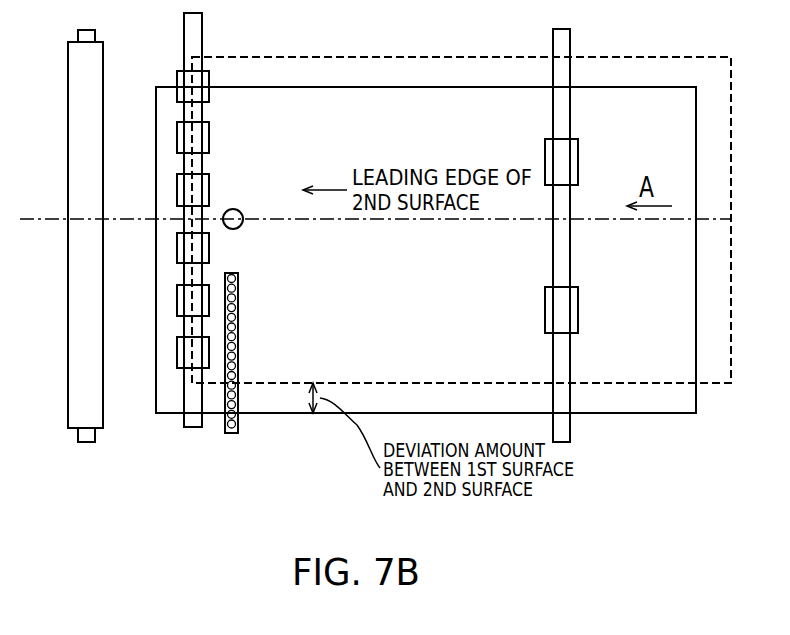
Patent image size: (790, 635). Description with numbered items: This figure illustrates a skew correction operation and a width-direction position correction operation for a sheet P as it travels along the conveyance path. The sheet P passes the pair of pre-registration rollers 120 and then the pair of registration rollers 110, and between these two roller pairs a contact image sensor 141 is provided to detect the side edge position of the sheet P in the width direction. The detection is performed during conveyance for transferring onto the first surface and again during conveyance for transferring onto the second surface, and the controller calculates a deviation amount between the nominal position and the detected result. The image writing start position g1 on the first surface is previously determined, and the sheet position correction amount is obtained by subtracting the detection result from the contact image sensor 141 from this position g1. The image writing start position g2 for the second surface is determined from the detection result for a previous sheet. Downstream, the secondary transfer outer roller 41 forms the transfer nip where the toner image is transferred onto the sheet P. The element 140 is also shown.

The secondary transfer outer roller 41 is at (70, 438).
The pair of registration rollers 110 is at (168, 421).
The pair of pre-registration rollers 120 is at (580, 355).
The mark 140 is at (233, 209).
The contact image sensor 141 is at (232, 436).
The sheet P is at (414, 95).
The image writing start position on the first surface g1 is at (249, 371).
The image writing start position on the second surface g2 is at (251, 415).